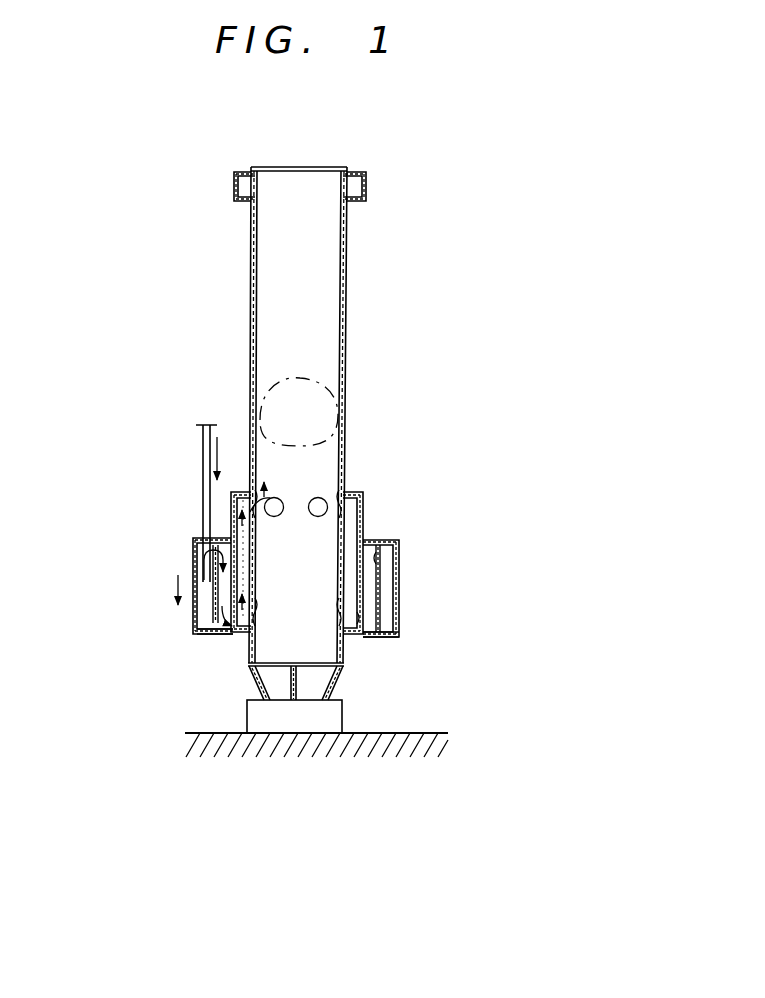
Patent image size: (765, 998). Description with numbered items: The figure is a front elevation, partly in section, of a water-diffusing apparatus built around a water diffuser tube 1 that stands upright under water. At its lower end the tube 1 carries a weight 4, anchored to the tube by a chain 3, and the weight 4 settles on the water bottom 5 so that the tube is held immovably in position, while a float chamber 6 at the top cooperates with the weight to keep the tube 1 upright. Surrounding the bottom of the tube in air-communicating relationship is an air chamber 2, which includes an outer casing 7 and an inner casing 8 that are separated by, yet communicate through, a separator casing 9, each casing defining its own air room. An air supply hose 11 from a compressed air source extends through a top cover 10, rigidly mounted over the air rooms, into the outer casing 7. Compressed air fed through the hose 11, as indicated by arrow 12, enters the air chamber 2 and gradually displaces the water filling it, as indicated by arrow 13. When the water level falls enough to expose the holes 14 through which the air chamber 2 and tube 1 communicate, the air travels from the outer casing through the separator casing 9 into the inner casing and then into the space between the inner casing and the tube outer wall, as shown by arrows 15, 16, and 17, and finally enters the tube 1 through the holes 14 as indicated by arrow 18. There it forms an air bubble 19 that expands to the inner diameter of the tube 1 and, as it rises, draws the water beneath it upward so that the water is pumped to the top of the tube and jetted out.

The water diffuser tube 1 is at (330, 298).
The air chamber 2 is at (408, 598).
The chain 3 is at (325, 700).
The weight 4 is at (279, 712).
The water bottom 5 is at (395, 738).
The float chamber 6 is at (355, 185).
The outer casing 7 is at (362, 520).
The inner casing 8 is at (398, 622).
The separator casing 9 is at (380, 568).
The top cover 10 is at (197, 540).
The air supply hose 11 is at (205, 486).
The arrow 12 is at (215, 453).
The arrow 13 is at (175, 582).
The holes 14 is at (215, 637).
The arrow 15 is at (205, 565).
The arrow 16 is at (215, 620).
The arrow 17 is at (238, 540).
The arrow 18 is at (280, 492).
The air bubble 19 is at (325, 410).